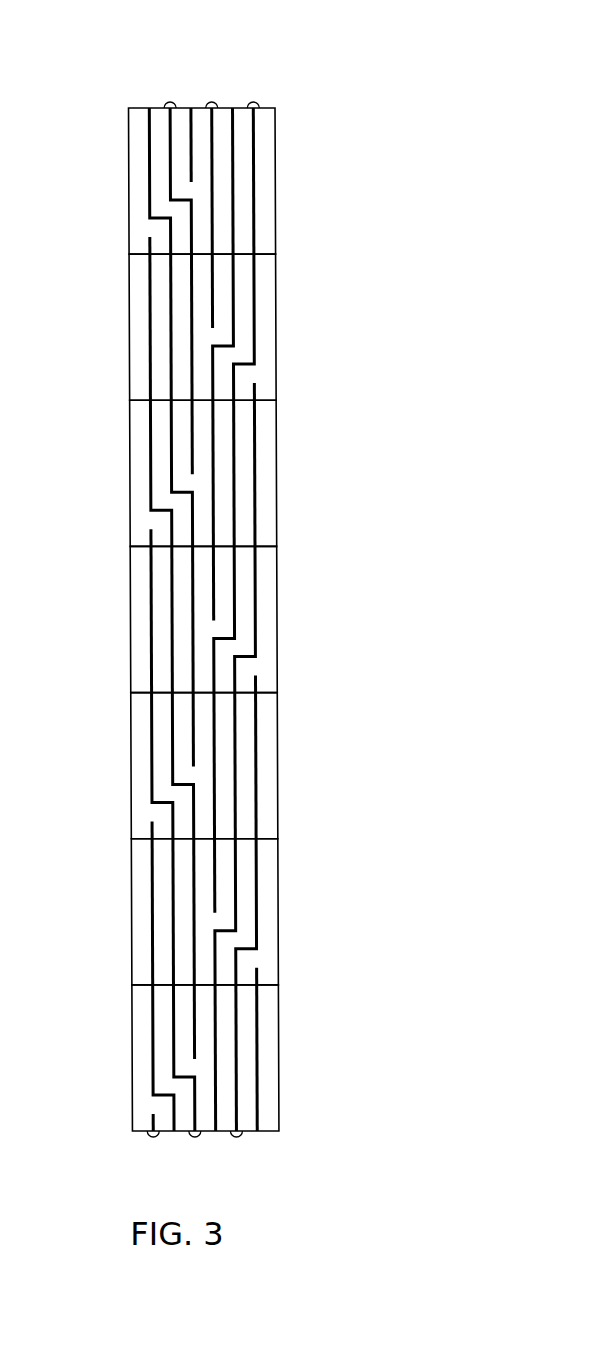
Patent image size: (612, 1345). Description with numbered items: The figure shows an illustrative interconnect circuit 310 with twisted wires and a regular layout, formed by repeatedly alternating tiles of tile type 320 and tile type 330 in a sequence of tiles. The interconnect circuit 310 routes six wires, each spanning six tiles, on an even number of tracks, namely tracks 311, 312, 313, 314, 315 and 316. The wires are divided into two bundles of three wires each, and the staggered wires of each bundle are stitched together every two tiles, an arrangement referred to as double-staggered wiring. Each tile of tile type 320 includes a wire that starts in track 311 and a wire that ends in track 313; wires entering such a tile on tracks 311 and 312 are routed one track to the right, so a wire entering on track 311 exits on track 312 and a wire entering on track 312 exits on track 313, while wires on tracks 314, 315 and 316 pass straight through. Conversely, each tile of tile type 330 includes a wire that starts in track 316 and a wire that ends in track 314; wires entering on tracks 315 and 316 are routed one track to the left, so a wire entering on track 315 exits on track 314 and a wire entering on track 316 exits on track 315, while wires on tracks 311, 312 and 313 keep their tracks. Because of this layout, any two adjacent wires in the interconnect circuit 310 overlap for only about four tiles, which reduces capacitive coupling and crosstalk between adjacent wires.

The interconnect circuit 310 is at (117, 78).
The track 311 is at (146, 635).
The track 312 is at (167, 606).
The track 313 is at (194, 635).
The track 314 is at (213, 606).
The track 315 is at (240, 635).
The track 316 is at (259, 606).
The tile type 320 is at (129, 195).
The tile type 330 is at (129, 341).